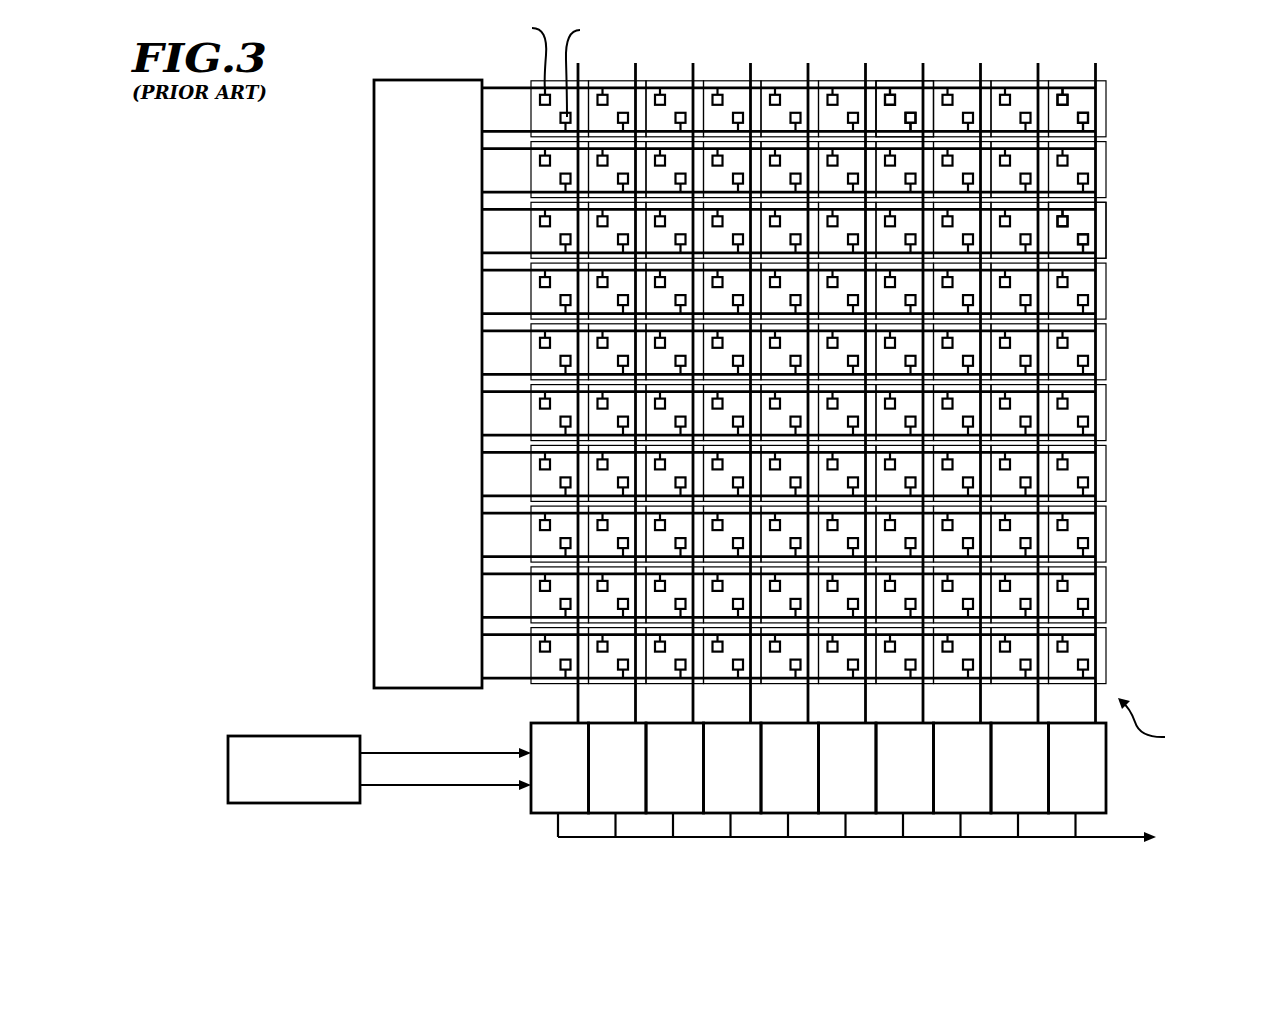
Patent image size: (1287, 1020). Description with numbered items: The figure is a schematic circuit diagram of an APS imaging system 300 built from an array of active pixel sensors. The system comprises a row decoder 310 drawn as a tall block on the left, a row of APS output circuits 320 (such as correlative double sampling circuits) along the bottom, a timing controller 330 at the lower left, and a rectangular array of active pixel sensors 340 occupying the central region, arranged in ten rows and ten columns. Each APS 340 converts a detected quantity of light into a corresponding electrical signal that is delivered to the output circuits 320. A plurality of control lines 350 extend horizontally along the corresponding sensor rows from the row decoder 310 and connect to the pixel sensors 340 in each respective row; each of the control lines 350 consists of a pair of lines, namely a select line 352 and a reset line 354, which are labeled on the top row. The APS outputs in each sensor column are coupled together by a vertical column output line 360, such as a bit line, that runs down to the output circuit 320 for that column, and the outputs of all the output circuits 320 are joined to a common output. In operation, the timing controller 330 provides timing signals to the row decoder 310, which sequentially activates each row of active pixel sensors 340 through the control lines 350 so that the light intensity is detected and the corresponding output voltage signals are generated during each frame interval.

The APS imaging system 300 is at (256, 173).
The row decoder 310 is at (373, 385).
The APS output circuits 320 is at (532, 803).
The timing controller 330 is at (292, 736).
The active pixel sensor 340 is at (903, 102).
The control lines 350 is at (500, 147).
The select line 352 is at (1076, 91).
The reset line 354 is at (1062, 131).
The column output line 360 is at (1097, 650).